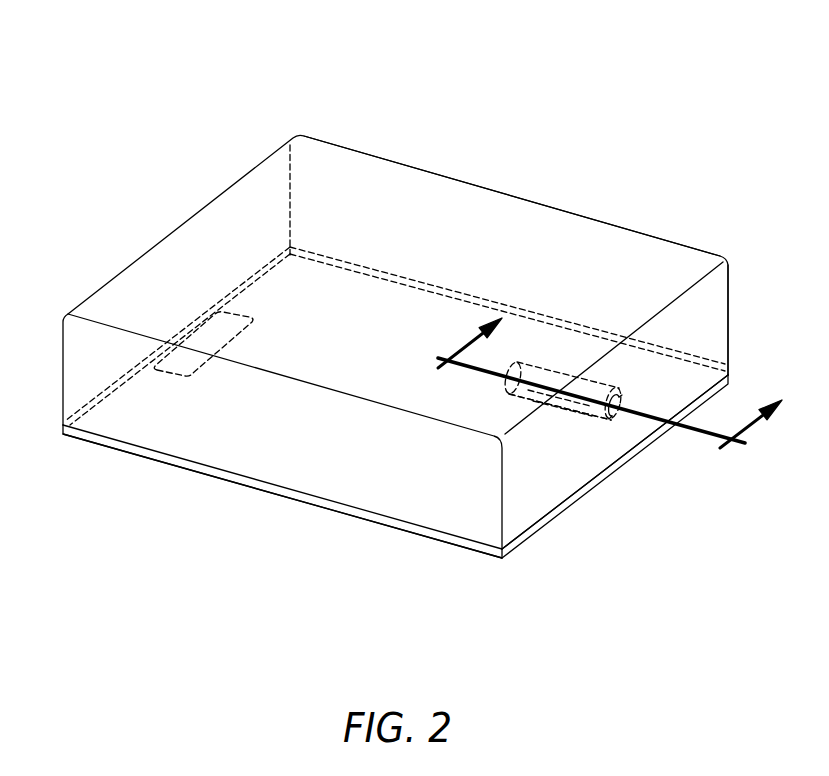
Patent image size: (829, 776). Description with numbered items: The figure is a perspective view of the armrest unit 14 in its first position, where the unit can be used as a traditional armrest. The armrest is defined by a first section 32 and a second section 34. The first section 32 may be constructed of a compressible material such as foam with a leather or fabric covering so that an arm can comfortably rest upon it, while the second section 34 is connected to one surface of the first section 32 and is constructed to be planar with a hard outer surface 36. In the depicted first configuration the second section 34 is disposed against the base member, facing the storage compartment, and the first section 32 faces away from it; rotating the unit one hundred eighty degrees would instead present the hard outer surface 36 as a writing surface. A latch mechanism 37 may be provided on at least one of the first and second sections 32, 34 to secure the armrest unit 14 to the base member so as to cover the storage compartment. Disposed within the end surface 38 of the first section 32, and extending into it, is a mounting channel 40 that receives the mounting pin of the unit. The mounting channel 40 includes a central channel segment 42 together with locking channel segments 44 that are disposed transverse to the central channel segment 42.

The armrest unit 14 is at (452, 108).
The first section 32 is at (477, 235).
The second section 34 is at (354, 512).
The hard outer surface 36 is at (272, 493).
The latch mechanism 37 is at (247, 340).
The end surface 38 is at (708, 345).
The mounting channel 40 is at (562, 423).
The central channel segment 42 is at (530, 368).
The locking channel segments 44 is at (610, 383).